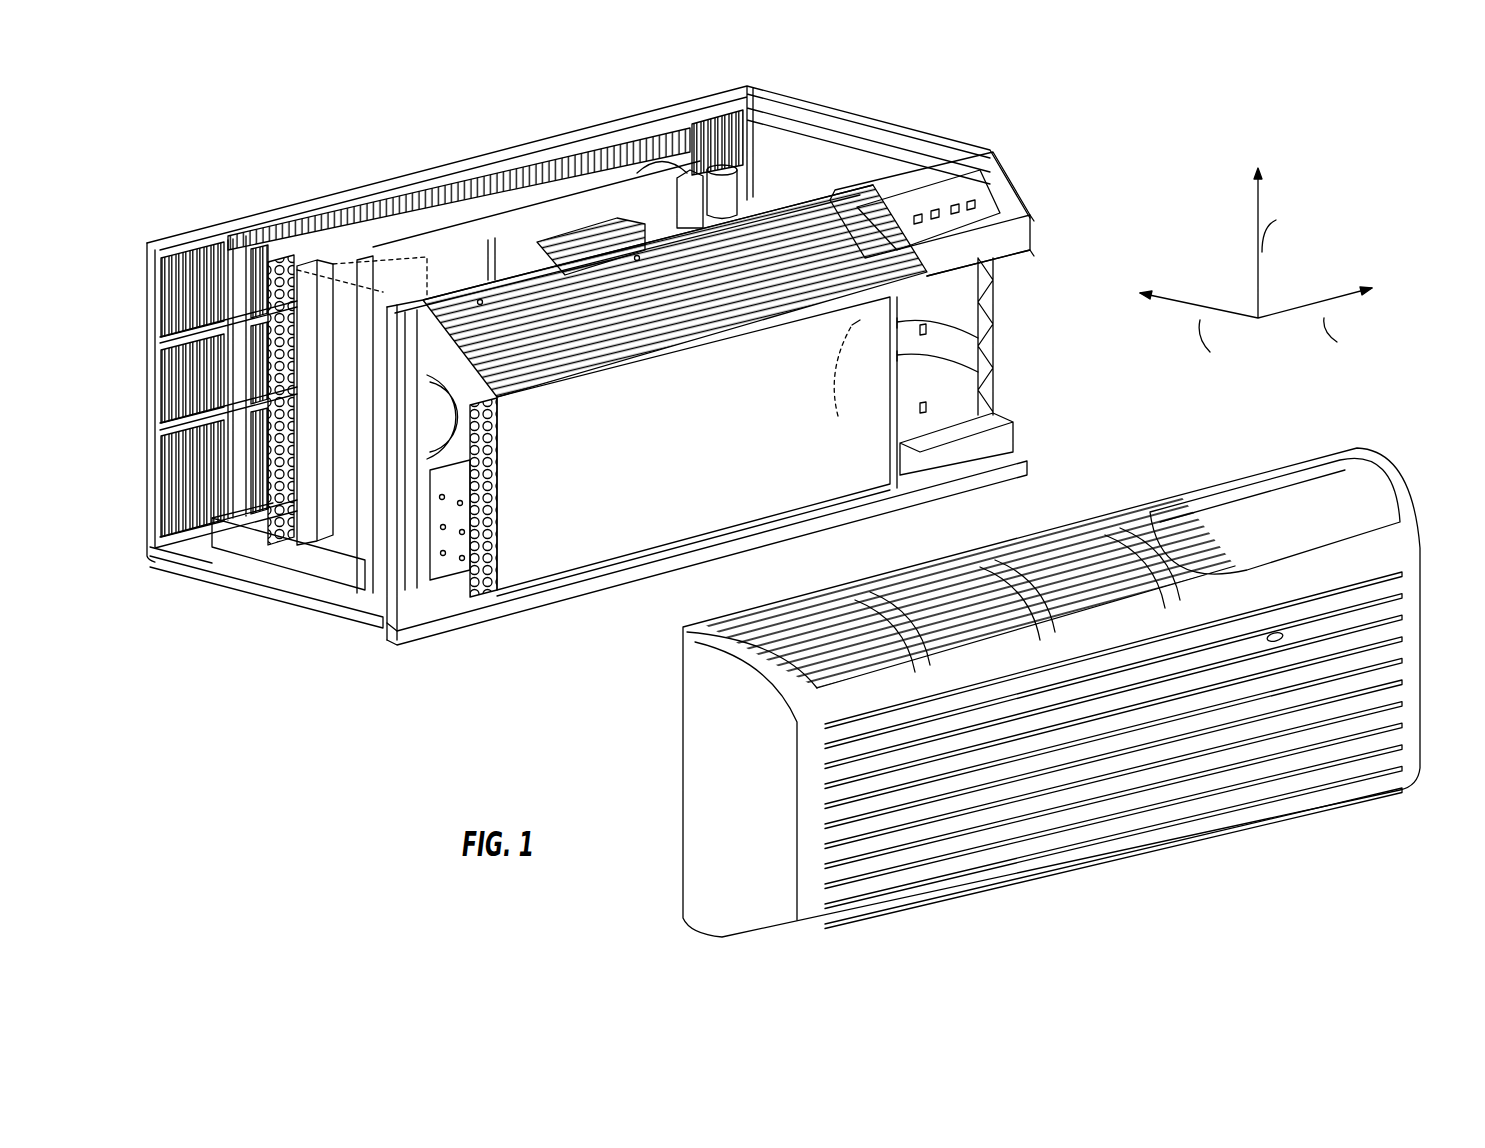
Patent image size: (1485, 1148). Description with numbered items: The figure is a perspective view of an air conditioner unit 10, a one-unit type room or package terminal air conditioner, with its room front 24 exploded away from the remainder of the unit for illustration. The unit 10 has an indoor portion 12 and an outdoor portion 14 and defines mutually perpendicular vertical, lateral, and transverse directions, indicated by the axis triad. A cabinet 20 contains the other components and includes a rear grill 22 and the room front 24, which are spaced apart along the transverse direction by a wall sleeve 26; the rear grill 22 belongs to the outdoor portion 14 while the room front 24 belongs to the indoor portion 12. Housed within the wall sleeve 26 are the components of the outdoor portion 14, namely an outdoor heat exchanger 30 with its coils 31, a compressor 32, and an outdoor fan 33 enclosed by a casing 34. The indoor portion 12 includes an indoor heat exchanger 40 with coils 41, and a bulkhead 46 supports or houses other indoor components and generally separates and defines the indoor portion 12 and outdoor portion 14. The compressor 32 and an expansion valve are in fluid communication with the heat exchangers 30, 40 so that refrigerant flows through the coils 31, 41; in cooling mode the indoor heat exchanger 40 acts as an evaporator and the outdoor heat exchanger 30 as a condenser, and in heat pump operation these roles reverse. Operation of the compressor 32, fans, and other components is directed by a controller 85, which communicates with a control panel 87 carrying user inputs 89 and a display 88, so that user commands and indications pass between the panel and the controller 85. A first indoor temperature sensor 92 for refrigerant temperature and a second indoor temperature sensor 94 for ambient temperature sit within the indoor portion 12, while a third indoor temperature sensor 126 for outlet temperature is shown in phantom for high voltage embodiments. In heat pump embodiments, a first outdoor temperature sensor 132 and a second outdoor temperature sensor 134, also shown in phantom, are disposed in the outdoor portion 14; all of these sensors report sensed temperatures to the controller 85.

The air conditioner unit 10 is at (1152, 152).
The indoor portion 12 is at (447, 634).
The outdoor portion 14 is at (268, 600).
The cabinet 20 is at (967, 128).
The rear grill 22 is at (527, 140).
The room front 24 is at (1398, 543).
The wall sleeve 26 is at (845, 130).
The outdoor heat exchanger 30 is at (280, 460).
The coils 31 is at (278, 450).
The compressor 32 is at (752, 176).
The outdoor fan 33 is at (328, 568).
The casing 34 is at (450, 240).
The indoor heat exchanger 40 is at (537, 546).
The coils 41 is at (905, 355).
The bulkhead 46 is at (390, 522).
The controller 85 is at (1040, 240).
The control panel 87 is at (1003, 214).
The display 88 is at (900, 198).
The user inputs 89 is at (982, 196).
The first indoor temperature sensor 92 is at (905, 320).
The second indoor temperature sensor 94 is at (1290, 636).
The third indoor temperature sensor 126 is at (839, 381).
The first outdoor temperature sensor 132 is at (300, 353).
The second outdoor temperature sensor 134 is at (150, 377).